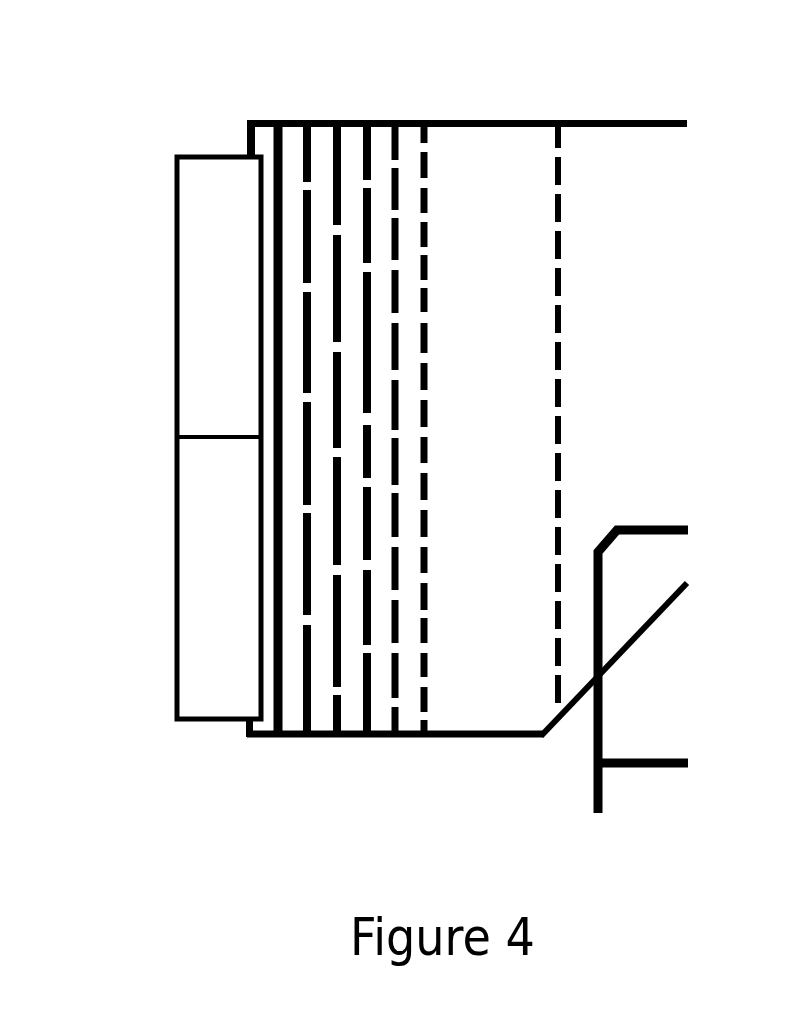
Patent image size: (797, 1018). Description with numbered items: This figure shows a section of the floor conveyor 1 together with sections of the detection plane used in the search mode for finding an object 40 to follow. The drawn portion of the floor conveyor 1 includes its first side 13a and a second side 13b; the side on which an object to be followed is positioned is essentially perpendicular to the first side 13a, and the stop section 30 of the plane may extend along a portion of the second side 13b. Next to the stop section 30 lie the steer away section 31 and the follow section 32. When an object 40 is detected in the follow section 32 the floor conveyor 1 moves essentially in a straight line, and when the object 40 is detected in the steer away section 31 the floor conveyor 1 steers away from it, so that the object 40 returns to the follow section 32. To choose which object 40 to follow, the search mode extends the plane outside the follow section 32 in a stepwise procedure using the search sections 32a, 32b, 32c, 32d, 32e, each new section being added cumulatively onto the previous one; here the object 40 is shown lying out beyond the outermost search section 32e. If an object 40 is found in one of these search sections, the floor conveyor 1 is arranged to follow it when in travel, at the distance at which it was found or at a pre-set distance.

The floor conveyor 1 is at (545, 762).
The first side 13a is at (618, 528).
The second side 13b is at (596, 647).
The stop section 30 is at (648, 258).
The steer away section 31 is at (467, 428).
The follow section 32 is at (350, 370).
The search section 32a is at (387, 135).
The search section 32b is at (352, 151).
The search section 32c is at (328, 135).
The search section 32d is at (293, 134).
The search section 32e is at (262, 134).
The object 40 is at (175, 353).